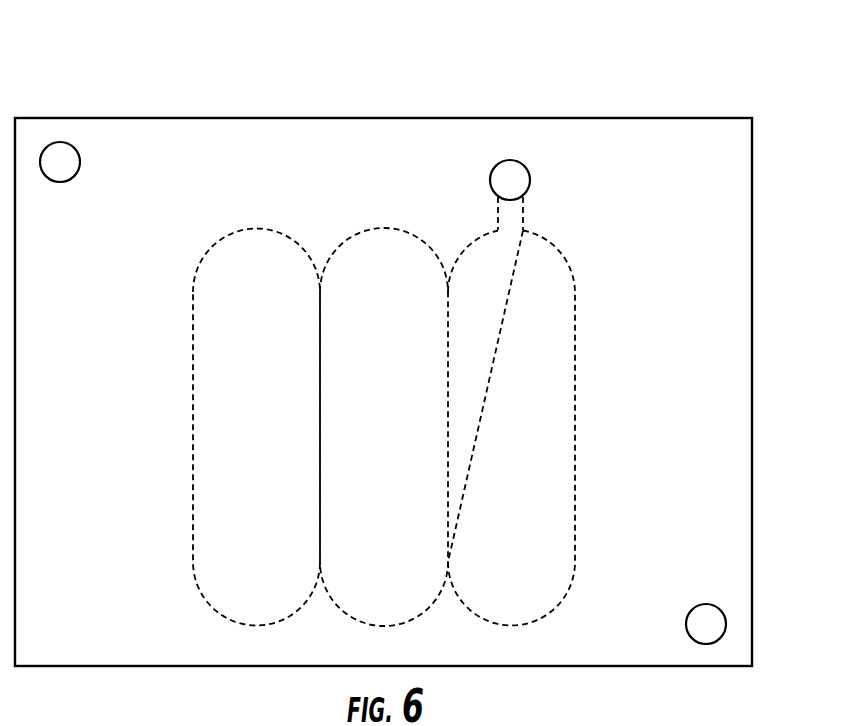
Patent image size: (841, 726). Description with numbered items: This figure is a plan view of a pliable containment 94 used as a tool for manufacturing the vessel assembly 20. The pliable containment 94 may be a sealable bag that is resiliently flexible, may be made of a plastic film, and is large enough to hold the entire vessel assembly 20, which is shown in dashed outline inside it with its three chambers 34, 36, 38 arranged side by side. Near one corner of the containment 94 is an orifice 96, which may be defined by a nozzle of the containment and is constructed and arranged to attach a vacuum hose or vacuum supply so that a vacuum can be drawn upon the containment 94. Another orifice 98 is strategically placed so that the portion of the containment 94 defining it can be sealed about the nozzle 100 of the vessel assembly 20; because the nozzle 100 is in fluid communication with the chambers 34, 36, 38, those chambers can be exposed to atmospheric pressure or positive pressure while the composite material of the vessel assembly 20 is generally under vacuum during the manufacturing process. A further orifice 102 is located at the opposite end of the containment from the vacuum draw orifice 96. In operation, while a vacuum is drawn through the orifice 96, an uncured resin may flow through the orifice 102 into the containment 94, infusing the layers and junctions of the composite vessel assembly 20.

The vessel assembly 20 is at (384, 338).
The chamber 34 is at (239, 437).
The chamber 36 is at (497, 437).
The chamber 38 is at (369, 437).
The pliable containment 94 is at (503, 116).
The orifice 96 is at (75, 148).
The orifice 98 is at (523, 166).
The nozzle 100 is at (527, 214).
The orifice 102 is at (714, 604).